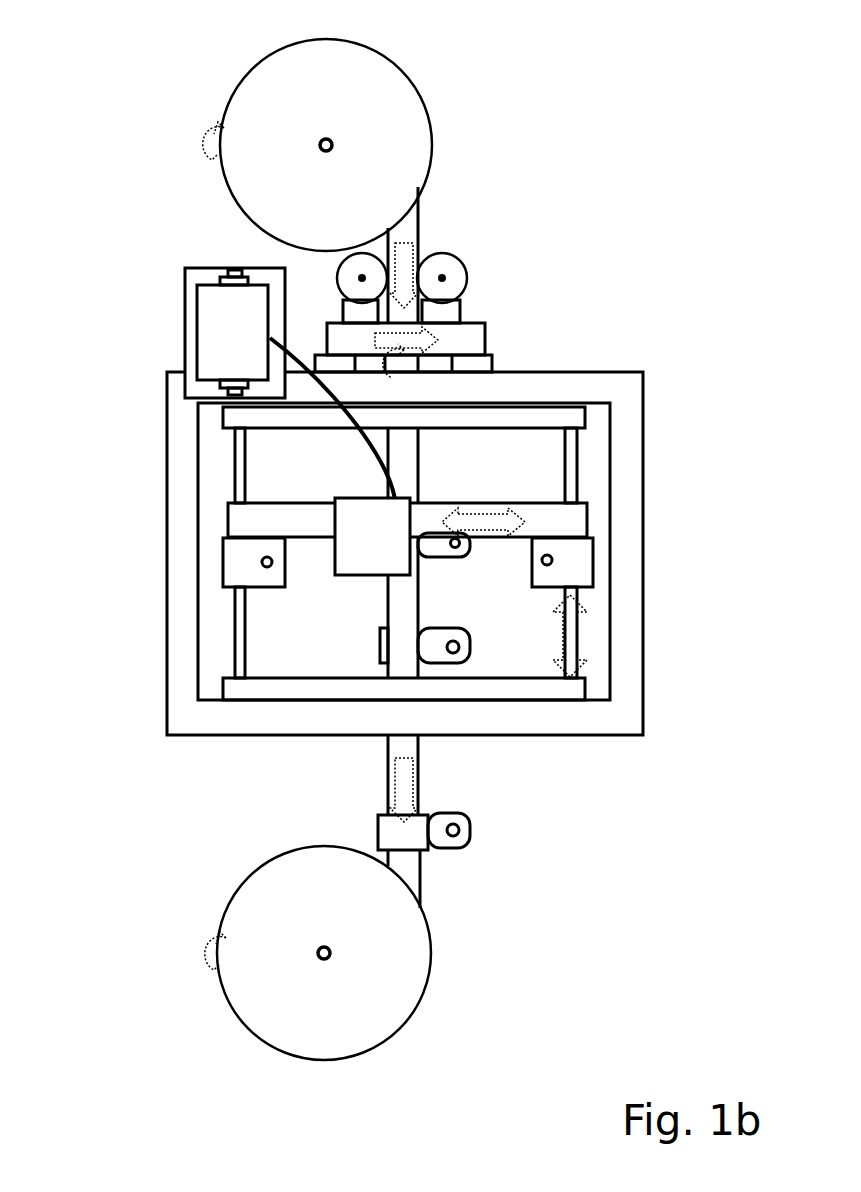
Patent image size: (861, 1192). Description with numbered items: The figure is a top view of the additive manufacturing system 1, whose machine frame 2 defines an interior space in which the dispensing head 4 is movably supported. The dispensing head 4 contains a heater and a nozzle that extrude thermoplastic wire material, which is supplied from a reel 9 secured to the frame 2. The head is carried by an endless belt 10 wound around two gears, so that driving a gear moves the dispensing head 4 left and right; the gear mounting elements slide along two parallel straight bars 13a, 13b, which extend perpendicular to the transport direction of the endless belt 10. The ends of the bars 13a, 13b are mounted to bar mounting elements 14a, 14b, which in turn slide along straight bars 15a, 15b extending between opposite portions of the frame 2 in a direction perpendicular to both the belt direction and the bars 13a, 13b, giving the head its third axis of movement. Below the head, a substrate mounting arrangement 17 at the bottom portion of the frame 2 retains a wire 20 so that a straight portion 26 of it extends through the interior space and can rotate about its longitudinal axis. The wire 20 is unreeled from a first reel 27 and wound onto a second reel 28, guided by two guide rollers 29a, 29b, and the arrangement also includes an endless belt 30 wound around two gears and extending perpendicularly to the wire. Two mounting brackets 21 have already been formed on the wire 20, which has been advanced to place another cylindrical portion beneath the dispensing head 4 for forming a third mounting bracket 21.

The system 1 is at (682, 212).
The machine frame 2 is at (627, 492).
The dispensing head 4 is at (360, 558).
The reel 9 is at (210, 332).
The endless belt 10 is at (537, 512).
The straight bar 13a is at (265, 560).
The straight bar 13b is at (547, 560).
The bar mounting element 14a is at (235, 568).
The bar mounting element 14b is at (582, 568).
The straight bar 15a is at (240, 480).
The straight bar 15b is at (572, 458).
The substrate mounting arrangement 17 is at (505, 300).
The wire 20 is at (407, 482).
The mounting bracket 21 is at (448, 547).
The straight portion 26 is at (432, 752).
The first reel 27 is at (380, 80).
The second reel 28 is at (403, 980).
The guide roller 29a is at (345, 270).
The guide roller 29b is at (448, 258).
The endless belt 30 is at (468, 335).